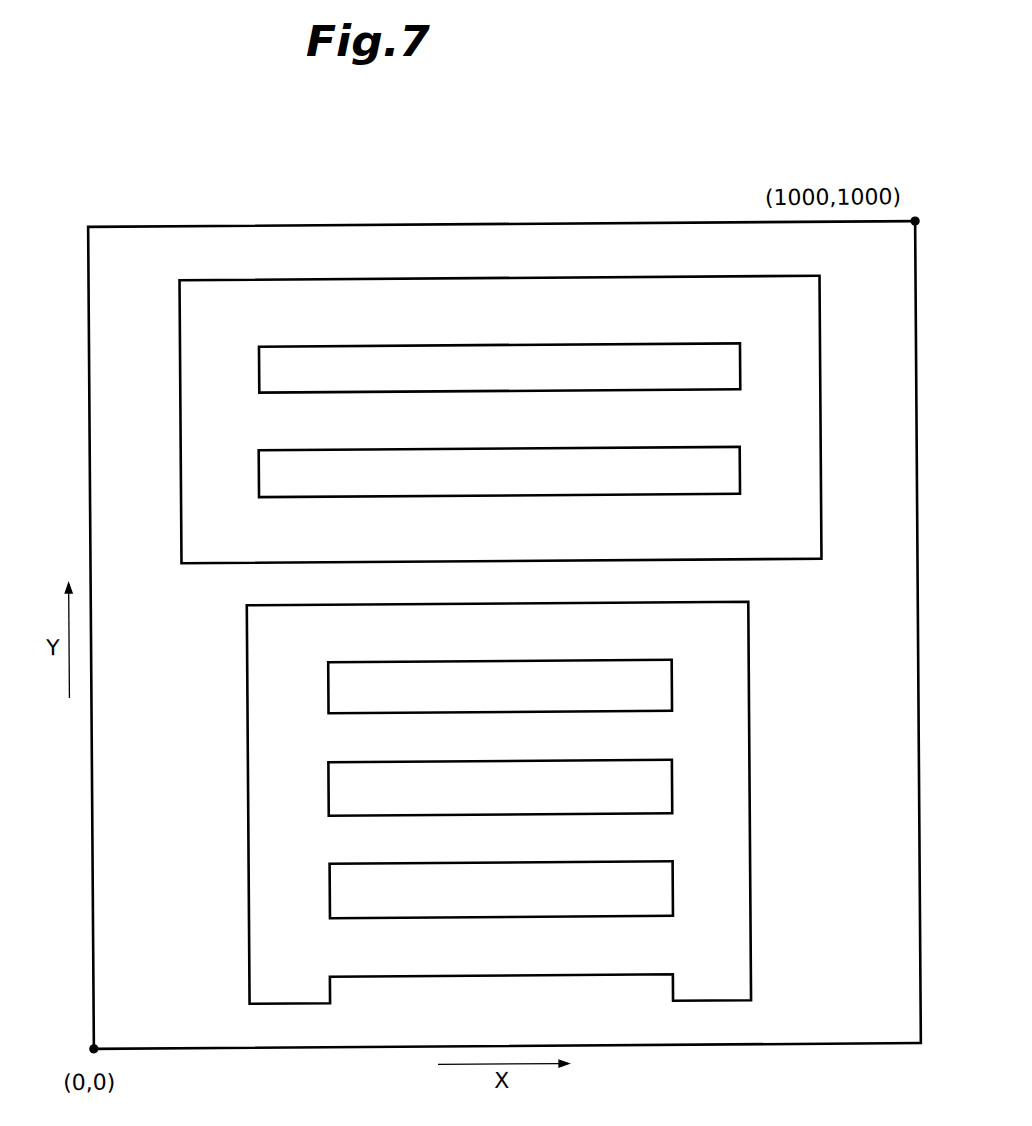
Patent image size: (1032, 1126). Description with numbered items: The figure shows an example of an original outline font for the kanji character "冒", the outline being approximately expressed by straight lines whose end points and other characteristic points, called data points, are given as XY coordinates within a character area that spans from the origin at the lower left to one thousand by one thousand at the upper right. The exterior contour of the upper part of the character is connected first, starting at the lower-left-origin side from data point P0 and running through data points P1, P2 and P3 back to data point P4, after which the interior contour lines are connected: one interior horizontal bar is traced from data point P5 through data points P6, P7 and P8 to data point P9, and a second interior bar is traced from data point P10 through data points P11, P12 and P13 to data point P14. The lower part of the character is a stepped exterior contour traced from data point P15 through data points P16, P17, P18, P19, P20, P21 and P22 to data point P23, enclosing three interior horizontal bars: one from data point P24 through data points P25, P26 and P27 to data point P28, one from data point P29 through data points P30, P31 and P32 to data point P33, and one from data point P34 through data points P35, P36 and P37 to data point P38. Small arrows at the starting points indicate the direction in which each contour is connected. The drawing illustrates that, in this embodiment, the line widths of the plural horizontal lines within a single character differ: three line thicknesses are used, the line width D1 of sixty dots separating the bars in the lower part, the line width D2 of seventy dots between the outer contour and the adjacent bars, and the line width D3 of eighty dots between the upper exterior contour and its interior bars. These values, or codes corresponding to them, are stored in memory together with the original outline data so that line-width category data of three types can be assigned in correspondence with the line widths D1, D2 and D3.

The start point of outer pattern P0 is at (187, 270).
The corner point P1 is at (824, 276).
The corner point P2 is at (824, 563).
The corner point P3 is at (180, 563).
The end point P4 is at (194, 290).
The start point of first inner pattern P5 is at (288, 380).
The corner point P6 is at (729, 379).
The corner point P7 is at (728, 357).
The corner point P8 is at (272, 357).
The end point P9 is at (225, 423).
The start point of second inner pattern P10 is at (259, 448).
The corner point P11 is at (271, 487).
The corner point P12 is at (729, 484).
The corner point P13 is at (729, 460).
The end point P14 is at (271, 470).
The start point of lower pattern P15 is at (682, 963).
The corner point P16 is at (329, 977).
The corner point P17 is at (329, 1004).
The corner point P18 is at (246, 1004).
The corner point P19 is at (245, 601).
The corner point P20 is at (750, 601).
The corner point P21 is at (750, 1003).
The corner point P22 is at (669, 1003).
The end point P23 is at (671, 976).
The start point P24 is at (673, 659).
The corner point P25 is at (341, 675).
The corner point P26 is at (341, 699).
The corner point P27 is at (658, 699).
The end point P28 is at (645, 671).
The start point P29 is at (672, 816).
The corner point P30 is at (659, 773).
The corner point P31 is at (341, 774).
The corner point P32 is at (341, 801).
The end point P33 is at (662, 789).
The start point P34 is at (672, 860).
The corner point P35 is at (341, 876).
The corner point P36 is at (341, 904).
The corner point P37 is at (659, 904).
The end point P38 is at (646, 872).
The line width D1 is at (455, 713).
The line width D2 is at (563, 392).
The line width D3 is at (563, 279).